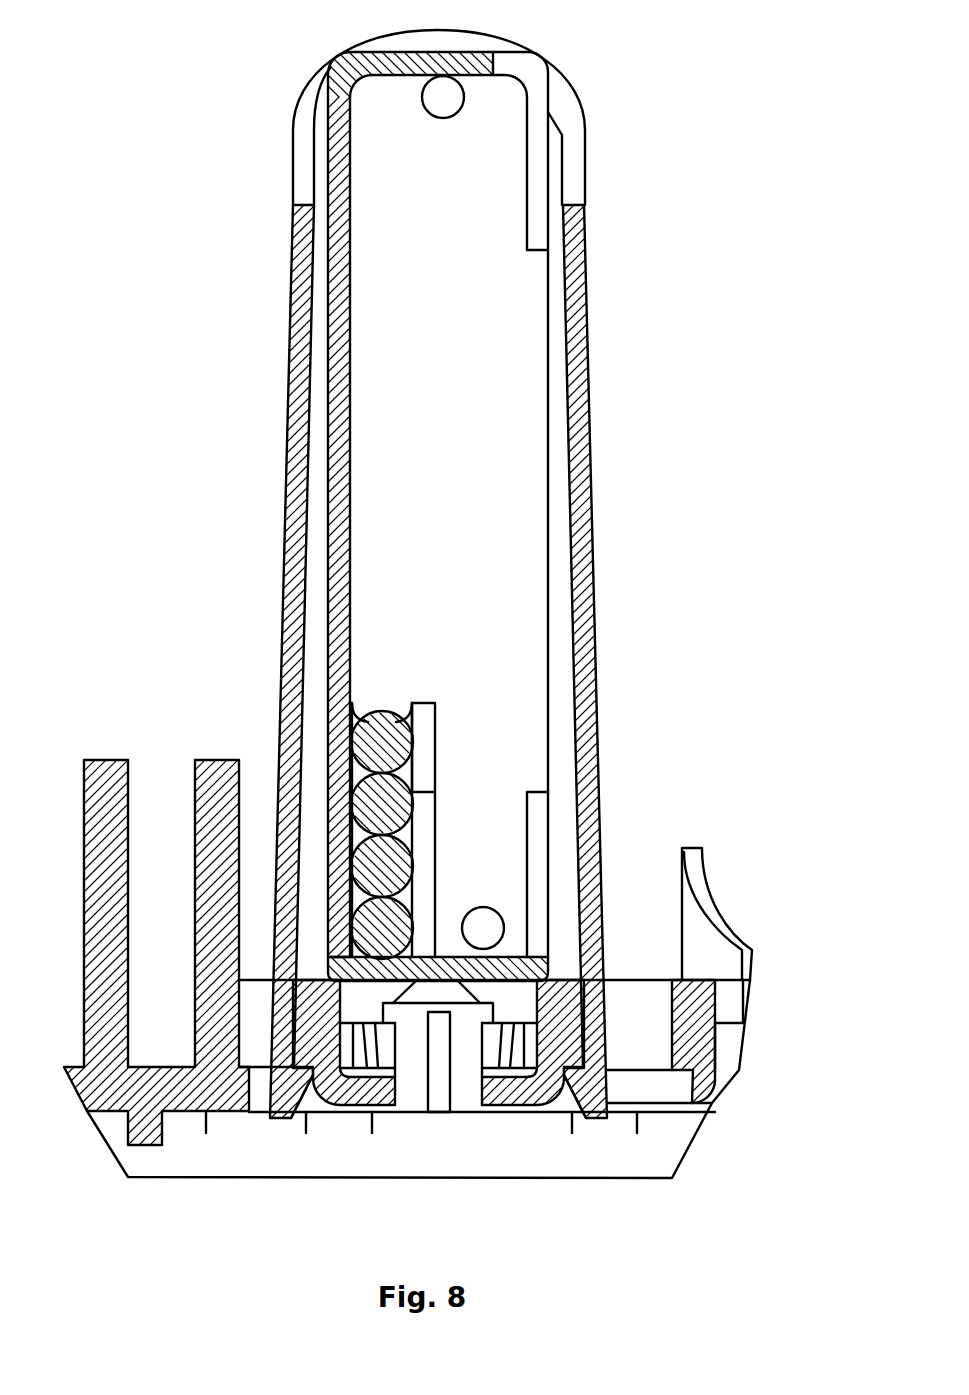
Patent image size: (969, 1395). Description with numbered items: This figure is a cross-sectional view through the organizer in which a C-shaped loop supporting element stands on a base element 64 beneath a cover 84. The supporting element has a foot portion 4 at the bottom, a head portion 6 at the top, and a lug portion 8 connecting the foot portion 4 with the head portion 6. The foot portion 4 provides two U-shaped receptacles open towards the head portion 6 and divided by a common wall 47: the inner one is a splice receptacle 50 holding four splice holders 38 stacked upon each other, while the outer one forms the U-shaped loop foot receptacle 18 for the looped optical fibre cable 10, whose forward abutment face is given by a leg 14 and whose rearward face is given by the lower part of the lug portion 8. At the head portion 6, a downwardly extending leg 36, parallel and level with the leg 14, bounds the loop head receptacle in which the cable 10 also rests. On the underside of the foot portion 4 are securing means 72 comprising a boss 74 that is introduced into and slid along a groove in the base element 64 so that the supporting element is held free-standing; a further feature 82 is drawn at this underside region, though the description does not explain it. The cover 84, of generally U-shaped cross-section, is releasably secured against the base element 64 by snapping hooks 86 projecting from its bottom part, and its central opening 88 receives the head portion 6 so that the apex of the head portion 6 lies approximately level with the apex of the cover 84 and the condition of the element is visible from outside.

The foot portion 4 is at (525, 967).
The head portion 6 is at (480, 53).
The lug portion 8 is at (333, 549).
The looped optical fibre cable 10 is at (443, 97).
The leg 14 is at (538, 903).
The U-shaped loop foot receptacle 18 is at (508, 803).
The leg 36 is at (538, 214).
The splice holder 38 is at (366, 745).
The common wall 47 is at (426, 768).
The splice receptacle 50 is at (377, 700).
The base element 64 is at (382, 992).
The securing means 72 is at (459, 1010).
The boss 74 is at (463, 990).
The channel 82 is at (397, 1012).
The cover 84 is at (288, 241).
The snapping hook 86 is at (600, 1098).
The opening 88 is at (296, 110).